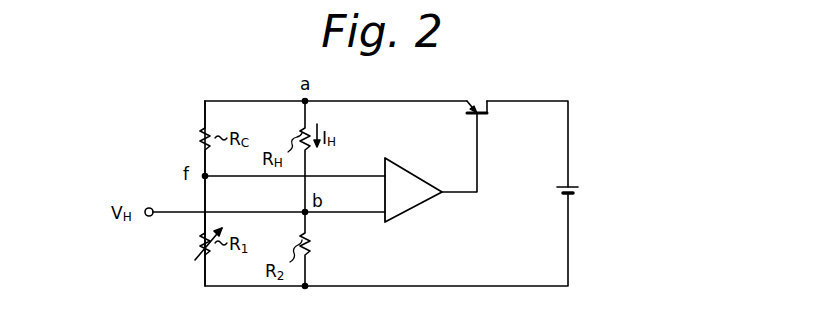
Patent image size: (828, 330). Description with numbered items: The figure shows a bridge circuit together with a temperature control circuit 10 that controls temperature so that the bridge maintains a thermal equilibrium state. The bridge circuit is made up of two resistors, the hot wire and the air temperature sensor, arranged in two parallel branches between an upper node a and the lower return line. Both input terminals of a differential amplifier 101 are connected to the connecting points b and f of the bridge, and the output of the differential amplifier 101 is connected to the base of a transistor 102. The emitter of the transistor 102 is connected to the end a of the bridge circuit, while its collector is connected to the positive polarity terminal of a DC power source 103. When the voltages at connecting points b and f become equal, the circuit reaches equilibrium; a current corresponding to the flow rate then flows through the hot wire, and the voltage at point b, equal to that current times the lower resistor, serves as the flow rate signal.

The temperature control circuit 10 is at (380, 317).
The differential amplifier 101 is at (428, 158).
The transistor 102 is at (495, 84).
The DC power source 103 is at (573, 180).